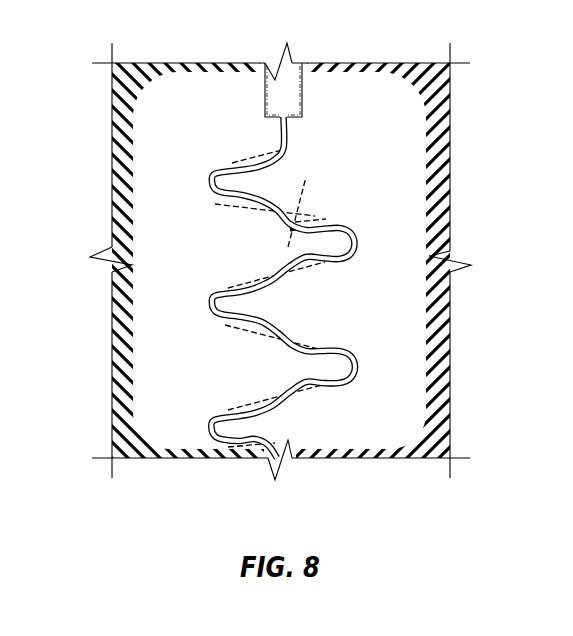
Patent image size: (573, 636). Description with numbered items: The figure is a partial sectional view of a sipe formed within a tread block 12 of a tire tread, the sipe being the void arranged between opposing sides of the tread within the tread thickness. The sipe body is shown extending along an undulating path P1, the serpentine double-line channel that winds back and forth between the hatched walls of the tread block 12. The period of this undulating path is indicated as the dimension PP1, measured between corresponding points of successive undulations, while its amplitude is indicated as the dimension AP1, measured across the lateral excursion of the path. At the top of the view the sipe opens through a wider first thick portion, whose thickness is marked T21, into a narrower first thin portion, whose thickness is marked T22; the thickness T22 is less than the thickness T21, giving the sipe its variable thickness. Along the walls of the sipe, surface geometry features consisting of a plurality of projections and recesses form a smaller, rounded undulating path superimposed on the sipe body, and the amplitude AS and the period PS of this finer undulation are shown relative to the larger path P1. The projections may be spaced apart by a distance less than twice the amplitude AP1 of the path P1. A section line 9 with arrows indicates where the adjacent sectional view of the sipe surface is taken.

The tread block 12 is at (200, 77).
The section line 9- 9 is at (298, 503).
The first undulating path P1 is at (210, 180).
The period of undulating path P1 PP1 is at (208, 305).
The amplitude of undulating path P1 AP1 is at (281, 225).
The amplitude of the surface undulating path AS is at (302, 197).
The thickness of first thick portion T21 is at (227, 92).
The thickness of first thin portion T22 is at (250, 135).
The period of the surface undulating path PS is at (328, 370).